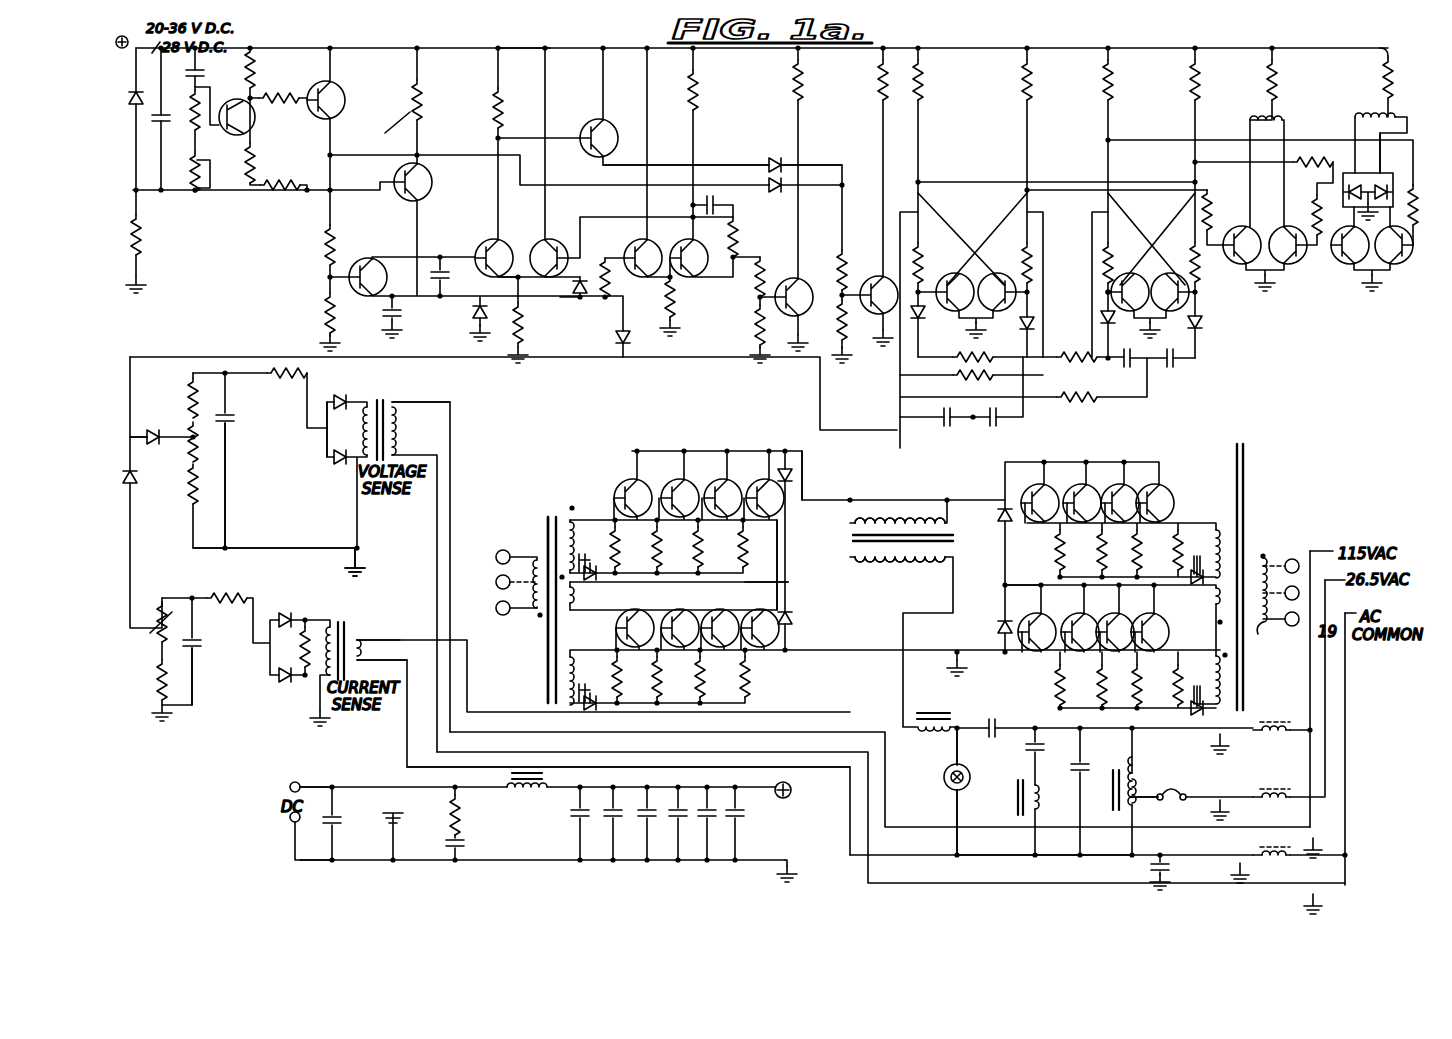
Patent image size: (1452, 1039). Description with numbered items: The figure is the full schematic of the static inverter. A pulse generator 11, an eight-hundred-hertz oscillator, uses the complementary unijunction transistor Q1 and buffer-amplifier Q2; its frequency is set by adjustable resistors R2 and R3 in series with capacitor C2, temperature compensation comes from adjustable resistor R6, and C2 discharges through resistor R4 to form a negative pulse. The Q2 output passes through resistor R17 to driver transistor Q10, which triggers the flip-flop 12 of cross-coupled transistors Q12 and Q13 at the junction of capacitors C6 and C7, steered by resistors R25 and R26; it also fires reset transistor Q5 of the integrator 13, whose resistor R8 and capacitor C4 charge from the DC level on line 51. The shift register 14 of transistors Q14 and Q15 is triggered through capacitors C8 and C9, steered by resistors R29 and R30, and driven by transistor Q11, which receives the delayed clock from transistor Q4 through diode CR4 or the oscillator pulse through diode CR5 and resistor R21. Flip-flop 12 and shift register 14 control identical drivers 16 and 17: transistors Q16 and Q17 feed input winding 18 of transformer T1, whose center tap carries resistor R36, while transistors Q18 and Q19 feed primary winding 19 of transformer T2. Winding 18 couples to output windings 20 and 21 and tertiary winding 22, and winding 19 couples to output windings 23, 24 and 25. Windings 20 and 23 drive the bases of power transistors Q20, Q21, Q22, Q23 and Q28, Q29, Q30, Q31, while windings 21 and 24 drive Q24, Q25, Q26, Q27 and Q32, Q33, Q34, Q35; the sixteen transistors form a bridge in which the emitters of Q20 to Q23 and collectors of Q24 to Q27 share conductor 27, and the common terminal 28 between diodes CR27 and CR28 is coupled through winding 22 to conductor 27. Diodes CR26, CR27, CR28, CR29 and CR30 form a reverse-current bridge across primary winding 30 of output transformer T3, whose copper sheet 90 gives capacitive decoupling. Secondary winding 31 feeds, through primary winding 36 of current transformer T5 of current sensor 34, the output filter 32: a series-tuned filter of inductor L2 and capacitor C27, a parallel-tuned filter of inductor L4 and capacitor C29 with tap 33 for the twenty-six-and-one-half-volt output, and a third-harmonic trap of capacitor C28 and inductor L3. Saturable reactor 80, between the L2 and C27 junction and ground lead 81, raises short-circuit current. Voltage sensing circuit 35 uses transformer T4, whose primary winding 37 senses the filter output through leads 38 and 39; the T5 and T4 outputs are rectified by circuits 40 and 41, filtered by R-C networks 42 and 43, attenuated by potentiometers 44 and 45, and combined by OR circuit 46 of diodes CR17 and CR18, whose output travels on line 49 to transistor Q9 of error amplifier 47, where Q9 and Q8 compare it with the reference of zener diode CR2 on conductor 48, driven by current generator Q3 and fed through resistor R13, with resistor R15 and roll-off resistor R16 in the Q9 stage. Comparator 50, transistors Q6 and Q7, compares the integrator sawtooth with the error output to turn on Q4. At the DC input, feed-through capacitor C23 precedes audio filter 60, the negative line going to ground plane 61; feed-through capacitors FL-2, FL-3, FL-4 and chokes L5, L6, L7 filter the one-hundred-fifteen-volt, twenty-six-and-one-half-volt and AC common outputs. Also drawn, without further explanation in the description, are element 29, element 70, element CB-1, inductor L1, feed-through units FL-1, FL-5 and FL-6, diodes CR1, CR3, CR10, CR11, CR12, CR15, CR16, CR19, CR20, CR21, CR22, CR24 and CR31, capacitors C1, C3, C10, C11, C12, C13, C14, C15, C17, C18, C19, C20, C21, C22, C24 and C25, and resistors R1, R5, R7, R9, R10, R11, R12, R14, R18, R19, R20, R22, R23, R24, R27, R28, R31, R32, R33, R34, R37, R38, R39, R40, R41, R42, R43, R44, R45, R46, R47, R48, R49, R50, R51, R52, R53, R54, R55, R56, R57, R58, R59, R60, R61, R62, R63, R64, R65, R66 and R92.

The pulse generator 11 is at (259, 47).
The flip-flop 12 is at (990, 154).
The integrator 13 is at (290, 264).
The shift register 14 is at (1162, 174).
The driver circuit 16 is at (1300, 128).
The driver circuit 17 is at (1393, 92).
The input winding 18 is at (552, 572).
The primary winding 19 is at (1378, 128).
The output winding 20 is at (563, 522).
The output winding 21 is at (565, 652).
The tertiary winding 22 is at (578, 610).
The output winding 23 is at (1230, 530).
The output winding 24 is at (1225, 656).
The output winding 25 is at (1233, 630).
The conductor 27 is at (785, 568).
The common terminal 28 is at (788, 582).
The drive line 29 is at (995, 585).
The primary winding 30 is at (917, 522).
The secondary winding 31 is at (910, 562).
The output filter 32 is at (948, 744).
The tap 33 is at (1140, 796).
The current sensor 34 is at (370, 620).
The voltage sensing circuit 35 is at (388, 506).
The primary winding 36 is at (370, 648).
The primary winding 37 is at (405, 402).
The lead 38 is at (477, 732).
The lead 39 is at (497, 750).
The rectifier circuit 40 is at (315, 438).
The rectifier circuit 41 is at (335, 570).
The R-C network 42 is at (238, 432).
The R-C network 43 is at (200, 660).
The potentiometer 44 is at (178, 505).
The potentiometer 45 is at (155, 640).
The OR circuit 46 is at (152, 446).
The error amplifier circuit 47 is at (678, 140).
The conductor 48 is at (555, 302).
The line 49 is at (237, 355).
The comparator circuit 50 is at (534, 227).
The line 51 is at (528, 48).
The audio filter 60 is at (556, 866).
The ground plane 61 is at (790, 872).
The output transformer core 70 is at (1268, 712).
The saturable reactor 80 is at (945, 780).
The lead 81 is at (1000, 846).
The copper sheet 90 is at (850, 524).
The diode CR1 is at (146, 119).
The zener diode CR2 is at (474, 326).
The zener diode CR3 is at (558, 289).
The diode CR4 is at (785, 162).
The diode CR5 is at (777, 197).
The diode CR10 is at (1056, 310).
The diode CR11 is at (1100, 325).
The diode CR12 is at (1202, 322).
The diode CR15 is at (1351, 183).
The diode CR16 is at (1395, 178).
The diode CR17 is at (155, 426).
The diode CR18 is at (152, 487).
The diode CR19 is at (346, 390).
The diode CR20 is at (338, 466).
The diode CR21 is at (282, 609).
The diode CR22 is at (290, 686).
The diode CR24 is at (600, 704).
The diode CR26 is at (1195, 717).
The diode CR27 is at (794, 492).
The diode CR28 is at (792, 620).
The diode CR29 is at (1000, 512).
The diode CR30 is at (998, 632).
The diode CR31 is at (634, 342).
The capacitor C1 is at (169, 119).
The capacitor C2 is at (205, 69).
The capacitor C3 is at (403, 323).
The capacitor C4 is at (452, 282).
The capacitor C6 is at (945, 432).
The capacitor C7 is at (998, 420).
The capacitor C8 is at (719, 209).
The capacitor C9 is at (1153, 370).
The capacitor C10 is at (241, 420).
The capacitor C11 is at (210, 649).
The capacitor C12 is at (593, 563).
The capacitor C13 is at (593, 686).
The capacitor C14 is at (1203, 562).
The capacitor C15 is at (1201, 688).
The capacitor C17 is at (574, 815).
The capacitor C18 is at (604, 823).
The capacitor C19 is at (637, 823).
The capacitor C20 is at (667, 823).
The capacitor C21 is at (699, 823).
The capacitor C22 is at (727, 823).
The feed-through capacitor C23 is at (354, 832).
The capacitor C24 is at (1142, 866).
The capacitor C25 is at (475, 849).
The capacitor C27 is at (1005, 714).
The capacitor C28 is at (1030, 754).
The capacitor C29 is at (1088, 768).
The inductor L1 is at (527, 793).
The inductor L2 is at (933, 711).
The inductor L3 is at (1039, 797).
The inductor L4 is at (1135, 778).
The choke L5 is at (1292, 724).
The choke L6 is at (1294, 787).
The choke L7 is at (1285, 852).
The feedthrough filter FL-1 is at (409, 833).
The feed-through capacitor FL-2 is at (1247, 874).
The feed-through capacitor FL-3 is at (1230, 748).
The feed-through capacitor FL-4 is at (1230, 812).
The feedthrough filter FL-5 is at (1323, 842).
The feedthrough filter FL-6 is at (1323, 900).
The circuit breaker CB-1 is at (1175, 793).
The transformer T1 is at (526, 610).
The transformer T2 is at (1278, 583).
The output transformer T3 is at (921, 540).
The transformer T4 is at (381, 421).
The current transformer T5 is at (343, 639).
The complementary unijunction transistor Q1 is at (225, 120).
The buffer-amplifier Q2 is at (340, 136).
The current generator Q3 is at (420, 192).
The transistor Q4 is at (610, 138).
The transistor Q5 is at (375, 257).
The transistor Q6 is at (485, 250).
The transistor Q7 is at (553, 162).
The transistor Q8 is at (625, 246).
The transistor Q9 is at (688, 246).
The driver transistor Q10 is at (785, 278).
The transistor Q11 is at (875, 277).
The transistor Q12 is at (951, 273).
The transistor Q13 is at (1001, 271).
The transistor Q14 is at (1130, 281).
The transistor Q15 is at (1172, 311).
The transistor Q16 is at (1232, 270).
The transistor Q17 is at (1292, 278).
The transistor Q18 is at (1345, 276).
The transistor Q19 is at (1400, 278).
The power transistor Q20 is at (624, 488).
The power transistor Q21 is at (672, 488).
The power transistor Q22 is at (718, 488).
The power transistor Q23 is at (760, 488).
The power transistor Q24 is at (632, 614).
The power transistor Q25 is at (682, 614).
The power transistor Q26 is at (723, 614).
The power transistor Q27 is at (765, 614).
The power transistor Q28 is at (1034, 499).
The power transistor Q29 is at (1074, 498).
The power transistor Q30 is at (1113, 498).
The power transistor Q31 is at (1147, 498).
The power transistor Q32 is at (1039, 622).
The power transistor Q33 is at (1080, 622).
The power transistor Q34 is at (1115, 622).
The power transistor Q35 is at (1157, 622).
The resistor R1 is at (149, 241).
The adjustable resistor R2 is at (185, 121).
The adjustable resistor R3 is at (187, 172).
The resistor R4 is at (261, 73).
The resistor R5 is at (278, 109).
The adjustable resistor R6 is at (263, 141).
The resistor R7 is at (387, 126).
The resistor R8 is at (428, 100).
The resistor R9 is at (318, 238).
The resistor R10 is at (320, 298).
The resistor R11 is at (515, 144).
The resistor R12 is at (534, 335).
The resistor R13 is at (613, 284).
The resistor R14 is at (686, 306).
The resistor R15 is at (713, 144).
The resistor R16 is at (719, 237).
The resistor R17 is at (752, 272).
The resistor R18 is at (773, 330).
The resistor R19 is at (818, 74).
The resistor R20 is at (880, 100).
The resistor R21 is at (840, 255).
The resistor R22 is at (845, 350).
The resistor R23 is at (938, 145).
The resistor R24 is at (908, 240).
The steering resistor R25 is at (980, 347).
The steering resistor R26 is at (971, 383).
The resistor R27 is at (1035, 258).
The resistor R28 is at (1048, 145).
The steering resistor R29 is at (1083, 370).
The steering resistor R30 is at (1102, 394).
The resistor R31 is at (1103, 265).
The resistor R32 is at (1128, 145).
The resistor R33 is at (1215, 145).
The resistor R34 is at (1180, 300).
The resistor R36 is at (1283, 84).
The resistor R37 is at (1371, 86).
The resistor R38 is at (1306, 215).
The resistor R39 is at (1313, 172).
The resistor R40 is at (1400, 208).
The resistor R41 is at (287, 384).
The resistor R42 is at (190, 394).
The resistor R43 is at (209, 442).
The resistor R44 is at (209, 494).
The resistor R45 is at (232, 584).
The potentiometer R46 is at (160, 612).
The resistor R47 is at (160, 683).
The resistor R48 is at (291, 647).
The resistor R49 is at (291, 174).
The resistor R50 is at (630, 547).
The resistor R51 is at (673, 547).
The resistor R52 is at (713, 547).
The resistor R53 is at (759, 547).
The resistor R54 is at (631, 677).
The resistor R55 is at (673, 677).
The resistor R56 is at (715, 677).
The resistor R57 is at (752, 684).
The resistor R58 is at (1049, 550).
The resistor R59 is at (1088, 550).
The resistor R60 is at (1125, 550).
The resistor R61 is at (1165, 550).
The resistor R62 is at (1052, 672).
The resistor R63 is at (1088, 685).
The resistor R64 is at (1125, 685).
The resistor R65 is at (1164, 685).
The resistor R66 is at (475, 812).
The resistor R92 is at (1221, 210).